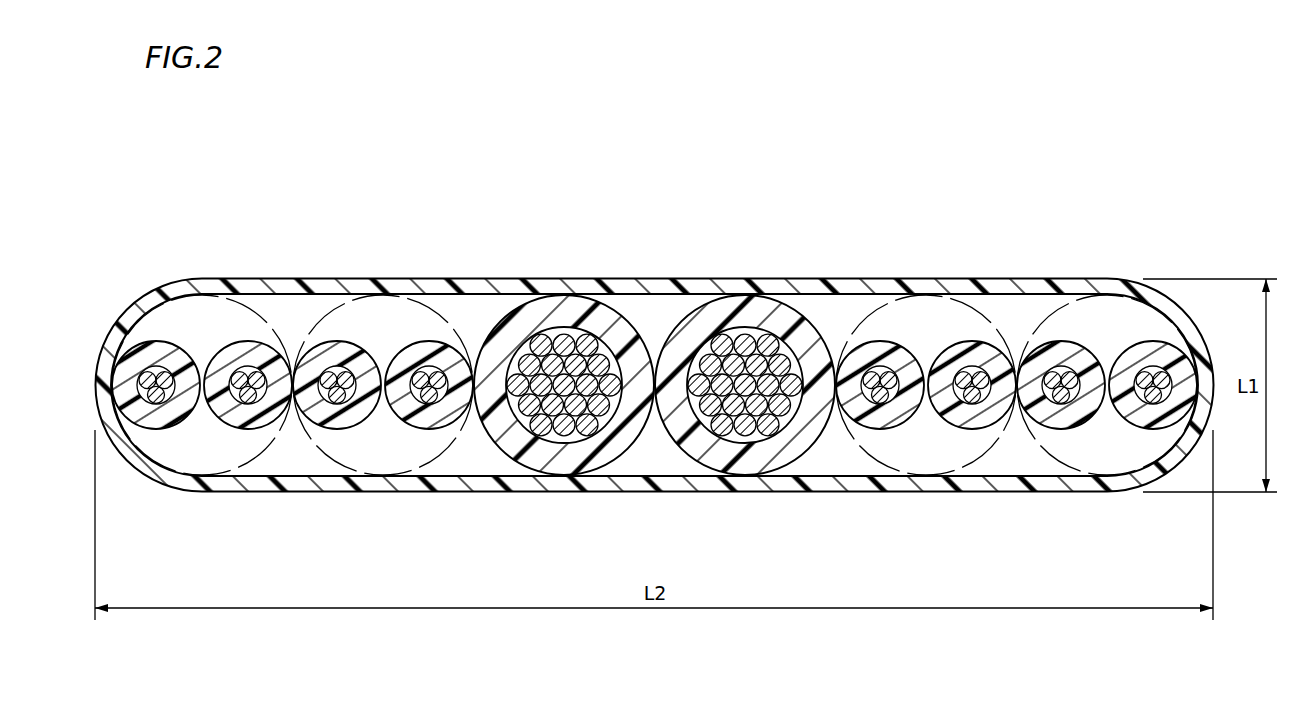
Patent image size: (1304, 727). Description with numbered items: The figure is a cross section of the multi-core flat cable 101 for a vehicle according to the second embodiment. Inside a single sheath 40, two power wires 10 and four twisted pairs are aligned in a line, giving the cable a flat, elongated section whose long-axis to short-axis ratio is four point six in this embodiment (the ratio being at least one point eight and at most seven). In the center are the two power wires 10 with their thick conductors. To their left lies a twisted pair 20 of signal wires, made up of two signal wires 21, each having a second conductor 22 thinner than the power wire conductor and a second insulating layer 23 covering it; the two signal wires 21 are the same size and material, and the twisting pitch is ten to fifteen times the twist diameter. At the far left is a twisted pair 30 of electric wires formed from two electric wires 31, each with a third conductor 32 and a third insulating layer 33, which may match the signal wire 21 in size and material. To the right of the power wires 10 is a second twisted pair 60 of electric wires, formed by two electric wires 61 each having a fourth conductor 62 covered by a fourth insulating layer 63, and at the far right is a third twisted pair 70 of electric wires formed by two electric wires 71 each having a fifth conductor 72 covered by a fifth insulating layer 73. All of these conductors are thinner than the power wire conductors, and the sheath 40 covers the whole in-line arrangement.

The multi-core flat cable 101 is at (852, 206).
The power wire 10 is at (497, 316).
The sheath 40 is at (607, 291).
The twisted pair of signal wires 20 is at (452, 310).
The signal wire 21 is at (368, 338).
The second conductor 22 is at (338, 396).
The second insulating layer 23 is at (318, 418).
The twisted pair of electric wires 30 is at (265, 310).
The electric wire 31 is at (188, 338).
The third conductor 32 is at (157, 396).
The third insulating layer 33 is at (138, 418).
The second twisted pair of electric wires 60 is at (992, 311).
The electric wire 61 is at (908, 338).
The fourth conductor 62 is at (883, 396).
The fourth insulating layer 63 is at (863, 418).
The third twisted pair of electric wires 70 is at (1056, 306).
The electric wire 71 is at (1098, 340).
The fifth conductor 72 is at (1063, 396).
The fifth insulating layer 73 is at (1043, 418).